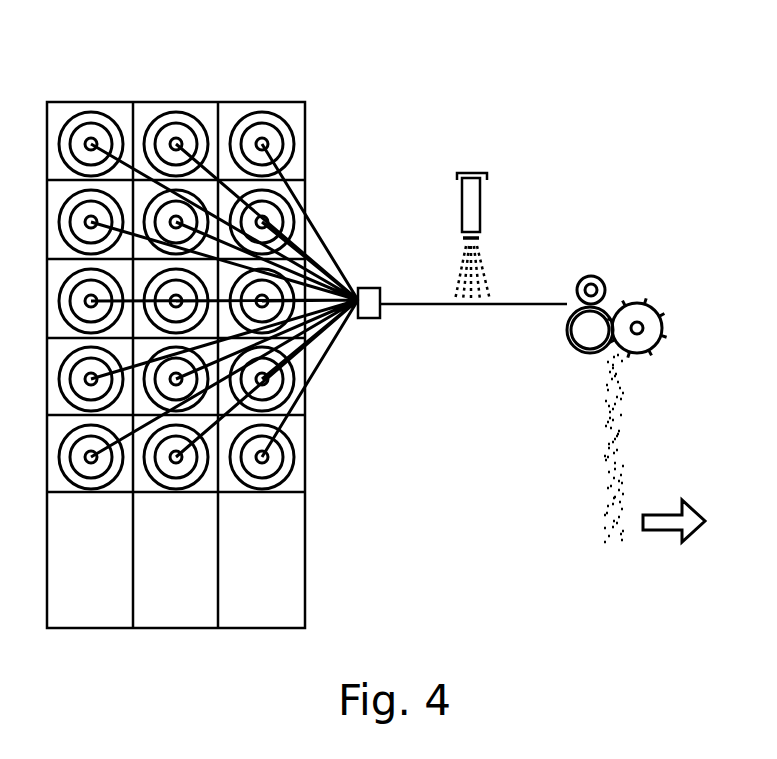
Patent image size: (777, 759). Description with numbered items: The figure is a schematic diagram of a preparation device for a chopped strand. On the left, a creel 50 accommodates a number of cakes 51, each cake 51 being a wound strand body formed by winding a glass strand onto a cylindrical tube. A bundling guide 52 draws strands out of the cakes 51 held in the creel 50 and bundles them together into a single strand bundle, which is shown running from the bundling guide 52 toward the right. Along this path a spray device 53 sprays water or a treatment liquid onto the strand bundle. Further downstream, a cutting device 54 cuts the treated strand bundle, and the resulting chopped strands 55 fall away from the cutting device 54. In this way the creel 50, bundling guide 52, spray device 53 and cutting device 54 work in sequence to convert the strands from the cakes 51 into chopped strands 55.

The creel 50 is at (96, 102).
The cake 51 is at (250, 102).
The bundling guide 52 is at (368, 288).
The spray device 53 is at (485, 205).
The cutting device 54 is at (620, 286).
The chopped strands 55 is at (612, 437).